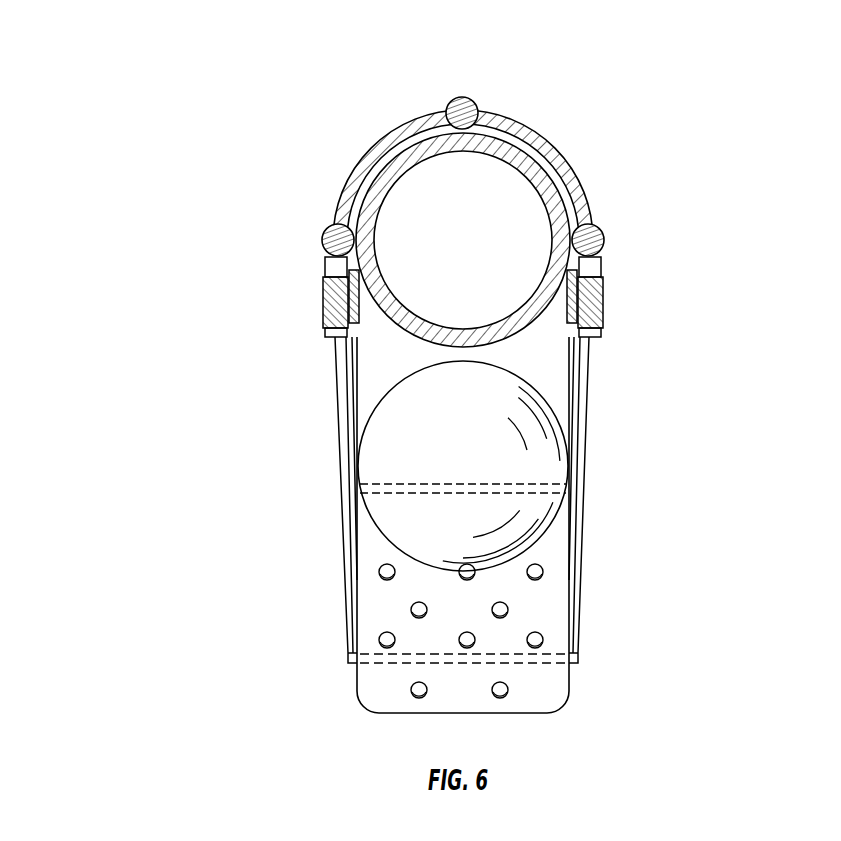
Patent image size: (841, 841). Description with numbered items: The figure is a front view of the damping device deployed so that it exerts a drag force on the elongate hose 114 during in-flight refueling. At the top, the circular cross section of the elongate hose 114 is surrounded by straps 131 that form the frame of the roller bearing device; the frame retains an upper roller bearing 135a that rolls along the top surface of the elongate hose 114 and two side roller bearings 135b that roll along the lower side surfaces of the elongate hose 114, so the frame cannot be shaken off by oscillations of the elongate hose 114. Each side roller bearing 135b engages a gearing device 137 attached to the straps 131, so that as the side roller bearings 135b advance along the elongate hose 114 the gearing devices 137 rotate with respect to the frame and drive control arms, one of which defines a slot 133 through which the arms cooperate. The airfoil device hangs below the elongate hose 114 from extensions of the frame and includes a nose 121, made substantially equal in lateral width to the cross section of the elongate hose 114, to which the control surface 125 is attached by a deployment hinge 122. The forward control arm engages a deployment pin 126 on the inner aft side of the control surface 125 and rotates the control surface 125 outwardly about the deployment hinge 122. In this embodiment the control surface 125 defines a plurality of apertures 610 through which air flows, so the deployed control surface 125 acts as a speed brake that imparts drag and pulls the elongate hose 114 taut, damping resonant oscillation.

The elongate hose 114 is at (514, 155).
The straps 131 is at (560, 137).
The upper roller bearing 135a is at (465, 98).
The side roller bearings 135b is at (323, 228).
The gearing devices 137 is at (320, 293).
The slot 133 is at (336, 398).
The control surface 125 is at (408, 678).
The nose 121 is at (398, 428).
The deployment hinge 122 is at (510, 498).
The deployment pin 126 is at (510, 660).
The apertures 610 is at (386, 577).